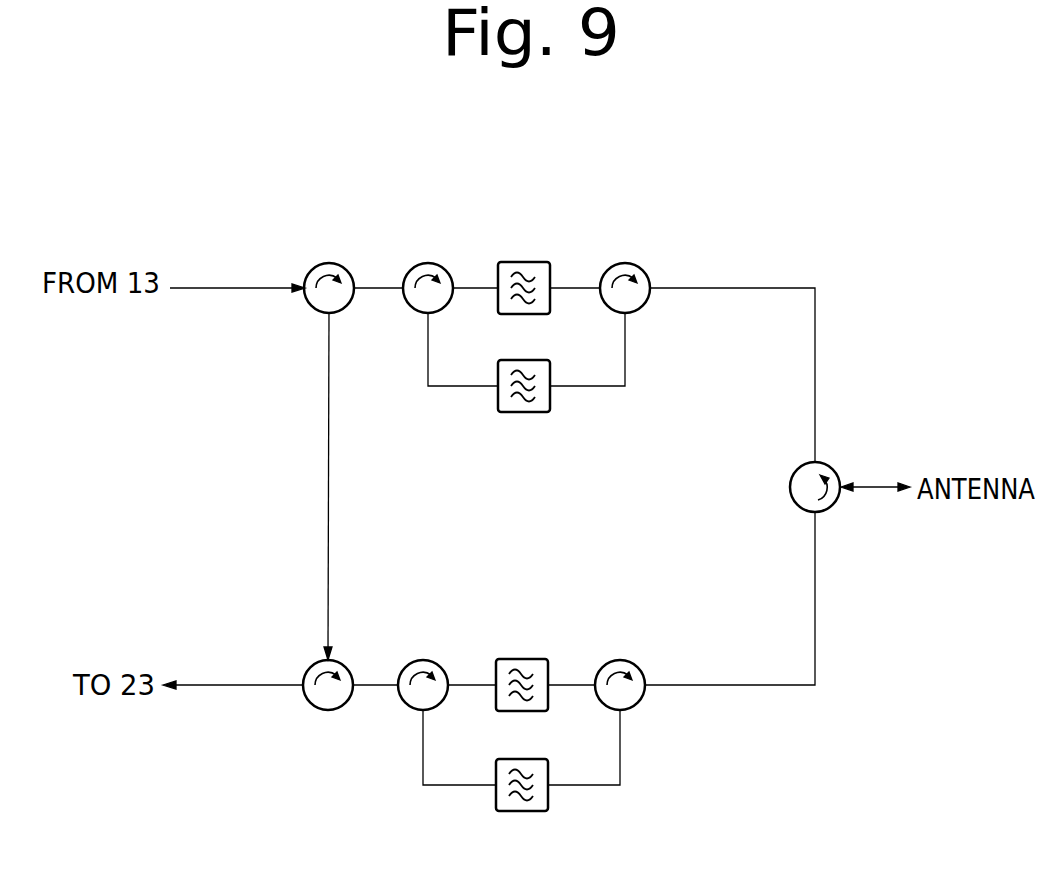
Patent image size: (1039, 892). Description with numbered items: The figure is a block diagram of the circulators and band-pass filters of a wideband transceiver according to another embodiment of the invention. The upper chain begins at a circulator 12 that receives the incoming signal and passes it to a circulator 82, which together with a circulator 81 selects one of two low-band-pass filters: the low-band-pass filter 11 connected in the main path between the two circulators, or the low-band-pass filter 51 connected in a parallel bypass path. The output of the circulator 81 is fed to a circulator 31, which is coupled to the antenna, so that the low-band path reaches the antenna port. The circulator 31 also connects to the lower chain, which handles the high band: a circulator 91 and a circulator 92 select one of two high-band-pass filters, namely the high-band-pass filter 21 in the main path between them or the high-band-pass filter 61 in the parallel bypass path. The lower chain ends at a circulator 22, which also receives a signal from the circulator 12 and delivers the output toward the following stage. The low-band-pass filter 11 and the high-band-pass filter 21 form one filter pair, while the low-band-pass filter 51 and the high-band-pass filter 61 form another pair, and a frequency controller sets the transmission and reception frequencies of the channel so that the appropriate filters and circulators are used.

The circulator 12 is at (333, 263).
The circulator 82 is at (436, 263).
The low-band-pass filter 11 is at (528, 262).
The circulator 81 is at (635, 263).
The low-band-pass filter 51 is at (524, 413).
The circulator 31 is at (841, 463).
The circulator 22 is at (345, 663).
The circulator 92 is at (438, 662).
The high-band-pass filter 21 is at (524, 659).
The circulator 91 is at (632, 661).
The high-band-pass filter 61 is at (521, 812).